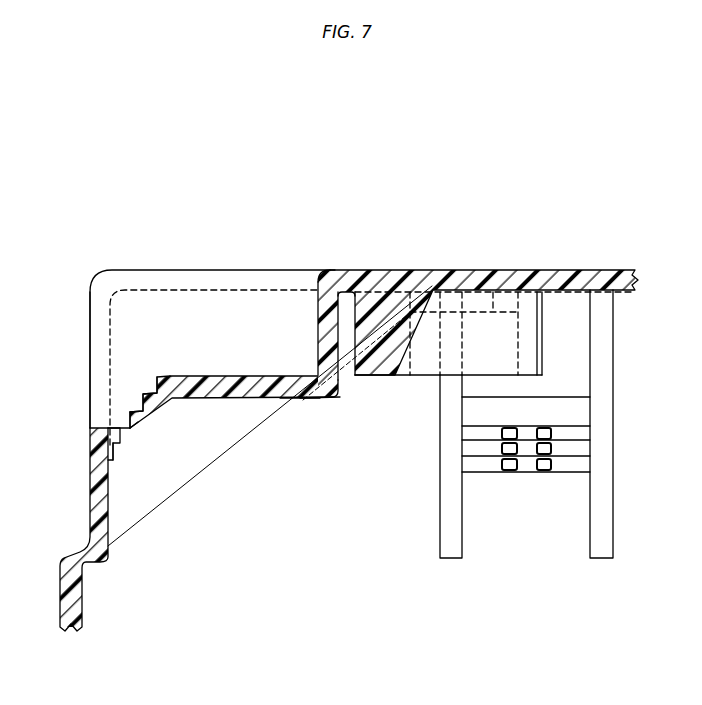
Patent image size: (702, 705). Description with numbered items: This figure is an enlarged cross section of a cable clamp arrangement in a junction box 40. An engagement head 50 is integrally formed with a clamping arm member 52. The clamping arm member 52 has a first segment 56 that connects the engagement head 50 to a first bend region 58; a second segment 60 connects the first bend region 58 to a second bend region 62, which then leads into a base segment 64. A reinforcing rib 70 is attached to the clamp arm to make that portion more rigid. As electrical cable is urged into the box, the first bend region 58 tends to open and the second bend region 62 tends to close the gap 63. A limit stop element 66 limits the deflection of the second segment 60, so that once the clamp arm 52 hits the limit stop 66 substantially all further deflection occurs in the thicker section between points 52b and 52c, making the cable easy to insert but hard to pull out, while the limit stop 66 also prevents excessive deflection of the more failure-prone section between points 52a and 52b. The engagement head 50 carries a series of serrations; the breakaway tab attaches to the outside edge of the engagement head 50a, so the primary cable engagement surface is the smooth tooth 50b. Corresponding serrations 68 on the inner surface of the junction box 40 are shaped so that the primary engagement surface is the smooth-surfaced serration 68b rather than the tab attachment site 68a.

The junction box 40 is at (520, 270).
The engagement head 50 is at (155, 405).
The outside edge of engagement head 50a is at (128, 430).
The tooth 50b is at (130, 428).
The clamping arm member 52 is at (207, 246).
The point on clamp arm 52a is at (347, 290).
The point on clamp arm 52b is at (330, 402).
The point on clamp arm 52c is at (203, 383).
The first segment 56 is at (300, 400).
The first bend region 58 is at (337, 388).
The second segment 60 is at (318, 358).
The second bend region 62 is at (324, 276).
The gap 63 is at (347, 386).
The base segment 64 is at (397, 270).
The limit stop element 66 is at (377, 377).
The serrations 68 is at (72, 427).
The tab attachment site 68a is at (130, 430).
The smooth-surfaced serration 68b is at (113, 437).
The reinforcing rib 70 is at (205, 398).